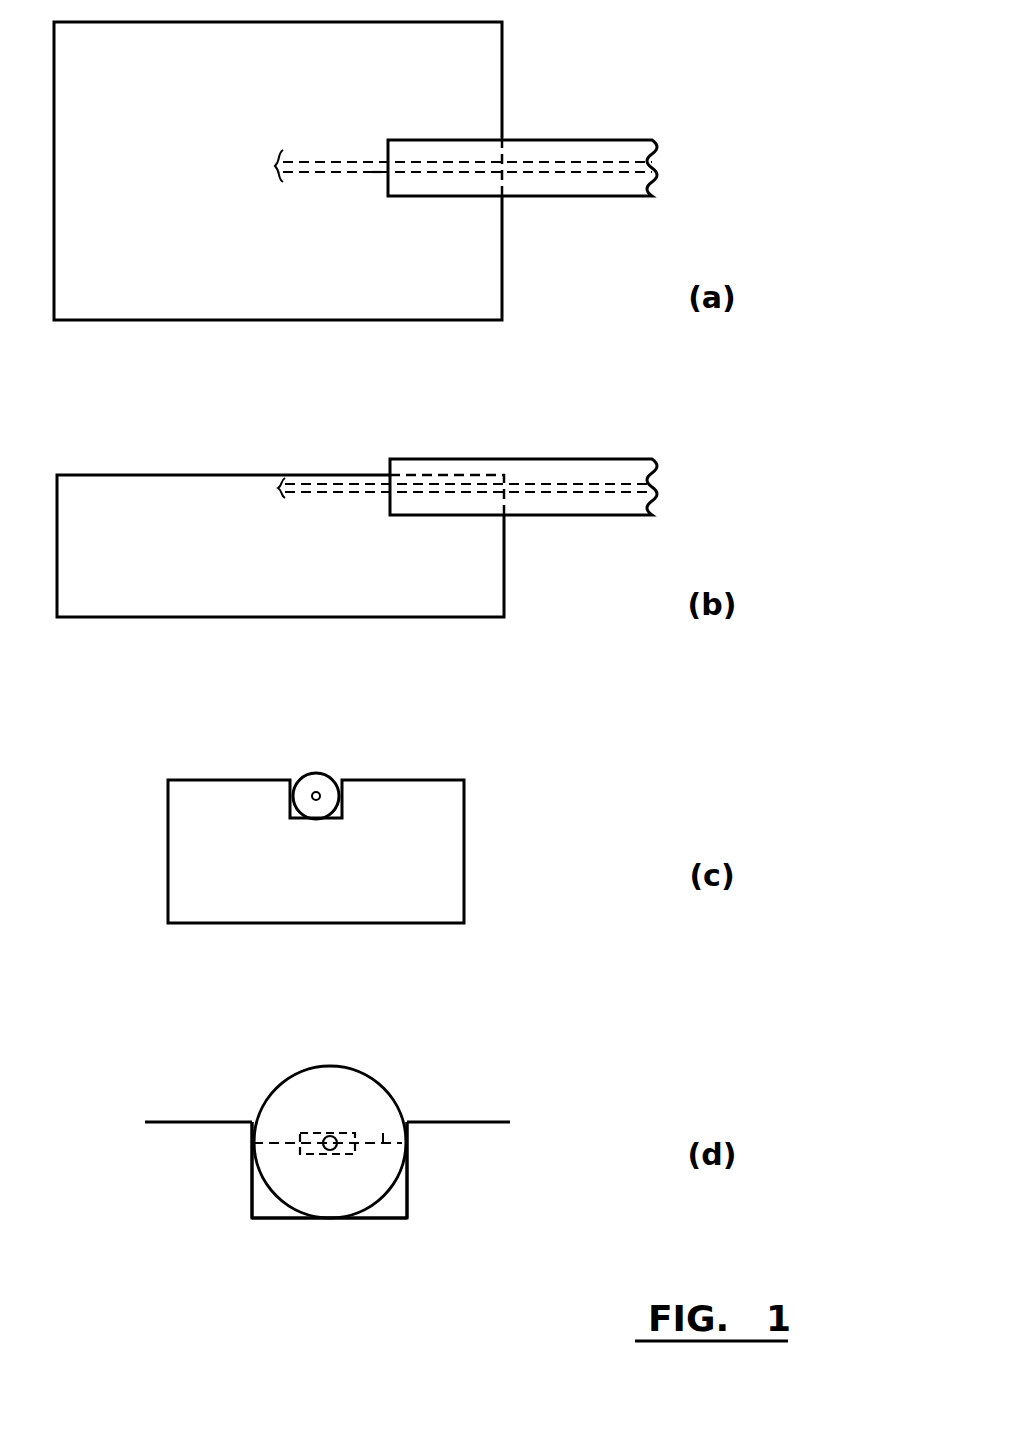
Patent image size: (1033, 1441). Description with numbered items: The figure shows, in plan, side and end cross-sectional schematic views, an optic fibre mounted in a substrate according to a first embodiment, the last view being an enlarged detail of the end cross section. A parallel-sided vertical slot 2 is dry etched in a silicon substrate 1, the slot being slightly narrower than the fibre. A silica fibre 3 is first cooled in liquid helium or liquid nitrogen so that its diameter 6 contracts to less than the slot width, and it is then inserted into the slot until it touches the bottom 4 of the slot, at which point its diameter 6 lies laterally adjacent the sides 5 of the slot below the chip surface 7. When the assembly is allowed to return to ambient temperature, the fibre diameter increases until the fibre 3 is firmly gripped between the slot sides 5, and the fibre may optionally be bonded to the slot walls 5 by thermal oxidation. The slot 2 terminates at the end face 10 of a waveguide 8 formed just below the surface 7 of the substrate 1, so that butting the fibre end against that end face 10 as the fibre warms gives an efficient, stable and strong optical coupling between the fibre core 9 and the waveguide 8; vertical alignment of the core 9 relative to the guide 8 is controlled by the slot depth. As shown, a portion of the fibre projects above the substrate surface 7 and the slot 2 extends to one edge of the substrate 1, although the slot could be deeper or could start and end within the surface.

The silicon substrate 1 is at (141, 186).
The slot 2 is at (348, 827).
The silica fibre 3 is at (583, 140).
The bottom of the slot 4 is at (280, 1219).
The sides of the slot 5 is at (252, 1200).
The fibre diameter 6 is at (384, 1133).
The chip surface 7 is at (200, 1122).
The waveguide 8 is at (310, 161).
The fibre core 9 is at (600, 175).
The end face of the waveguide 10 is at (372, 172).